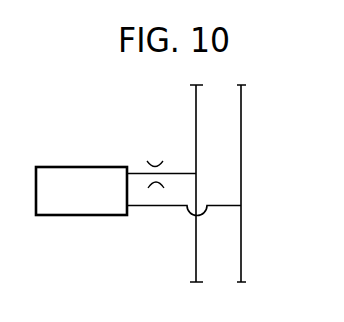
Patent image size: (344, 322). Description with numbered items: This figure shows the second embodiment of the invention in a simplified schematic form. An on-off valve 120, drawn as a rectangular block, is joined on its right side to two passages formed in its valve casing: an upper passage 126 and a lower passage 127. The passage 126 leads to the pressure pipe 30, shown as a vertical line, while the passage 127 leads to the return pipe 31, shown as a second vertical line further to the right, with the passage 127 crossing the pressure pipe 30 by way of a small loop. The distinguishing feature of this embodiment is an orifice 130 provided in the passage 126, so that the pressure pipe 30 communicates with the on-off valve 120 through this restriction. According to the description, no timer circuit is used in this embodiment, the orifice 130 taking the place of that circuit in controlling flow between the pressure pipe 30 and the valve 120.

The pressure pipe 30 is at (196, 105).
The return pipe 31 is at (242, 133).
The on-off valve 120 is at (72, 207).
The passage 126 is at (178, 173).
The passage 127 is at (155, 208).
The orifice 130 is at (152, 167).